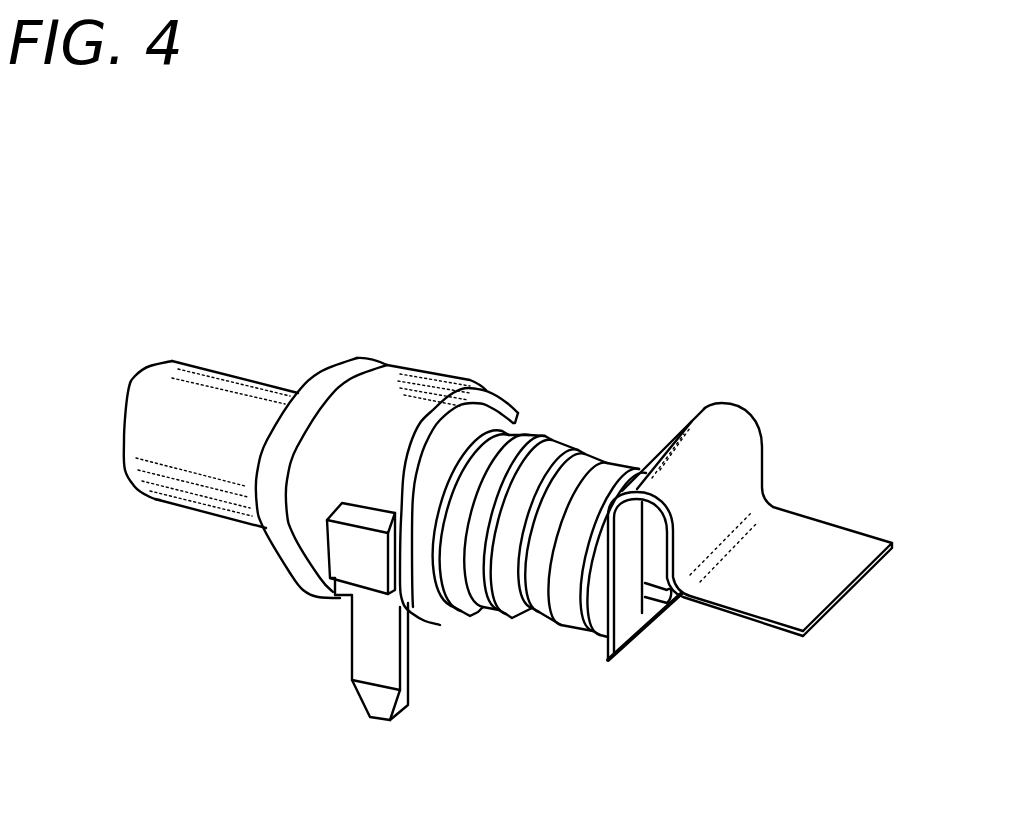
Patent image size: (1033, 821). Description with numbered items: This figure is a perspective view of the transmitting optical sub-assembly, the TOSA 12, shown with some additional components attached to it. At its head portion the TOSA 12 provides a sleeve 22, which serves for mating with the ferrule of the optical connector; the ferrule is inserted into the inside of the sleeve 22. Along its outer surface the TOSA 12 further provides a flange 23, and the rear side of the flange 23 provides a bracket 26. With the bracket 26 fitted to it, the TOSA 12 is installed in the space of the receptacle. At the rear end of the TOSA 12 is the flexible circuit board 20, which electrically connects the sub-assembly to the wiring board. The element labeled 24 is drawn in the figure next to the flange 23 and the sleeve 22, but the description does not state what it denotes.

The TOSA 12 is at (557, 408).
The flexible circuit board 20 is at (740, 430).
The sleeve 22 is at (195, 408).
The flange 23 is at (370, 402).
The flange 24 is at (335, 393).
The bracket 26 is at (427, 390).